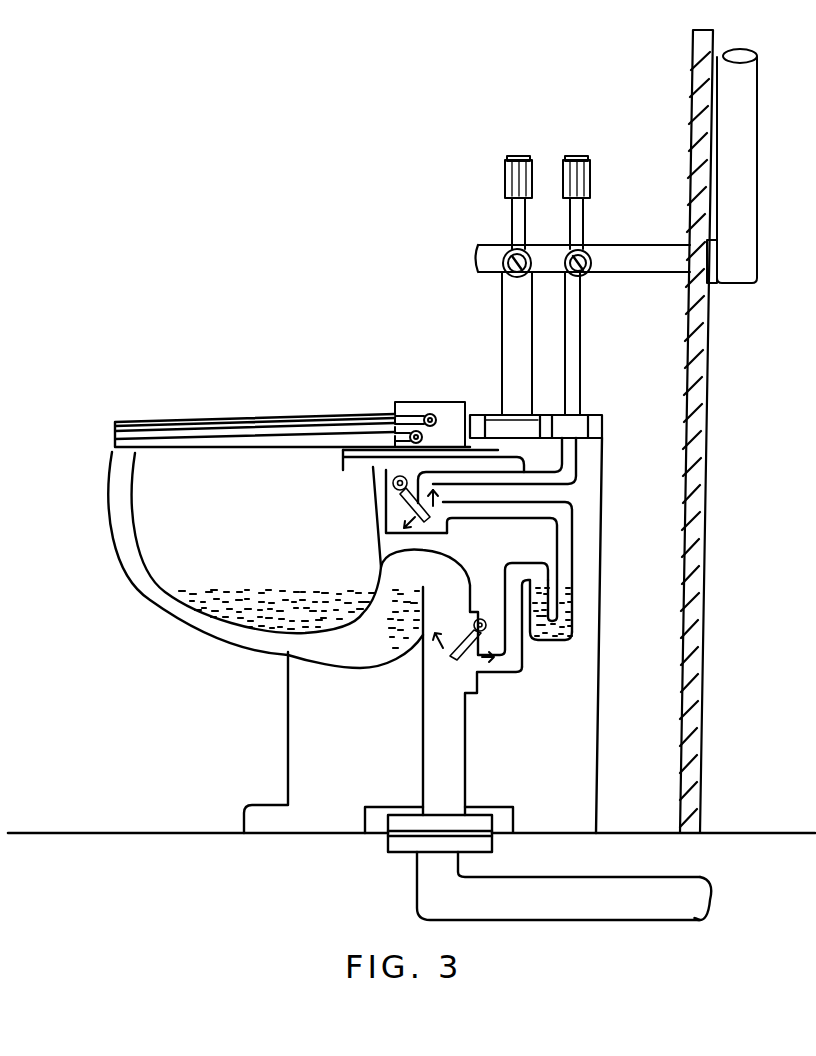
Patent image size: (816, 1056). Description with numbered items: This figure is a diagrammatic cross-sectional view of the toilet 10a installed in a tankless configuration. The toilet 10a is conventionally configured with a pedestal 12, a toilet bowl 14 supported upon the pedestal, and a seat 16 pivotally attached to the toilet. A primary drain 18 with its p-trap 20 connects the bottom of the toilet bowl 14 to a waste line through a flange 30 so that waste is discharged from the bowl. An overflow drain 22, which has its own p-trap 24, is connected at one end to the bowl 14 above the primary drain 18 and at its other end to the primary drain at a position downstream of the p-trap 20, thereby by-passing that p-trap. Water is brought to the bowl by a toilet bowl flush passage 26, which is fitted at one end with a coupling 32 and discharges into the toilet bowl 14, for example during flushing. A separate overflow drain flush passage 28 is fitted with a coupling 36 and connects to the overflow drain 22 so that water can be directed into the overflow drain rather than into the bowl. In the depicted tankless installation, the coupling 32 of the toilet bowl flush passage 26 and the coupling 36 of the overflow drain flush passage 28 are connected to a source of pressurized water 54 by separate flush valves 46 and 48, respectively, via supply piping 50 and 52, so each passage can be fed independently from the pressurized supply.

The toilet with flushable overflow drain 10a is at (122, 329).
The pedestal 12 is at (300, 728).
The toilet bowl 14 is at (133, 557).
The seat 16 is at (113, 438).
The primary drain 18 is at (462, 758).
The p-trap 20 is at (366, 670).
The overflow drain 22 is at (574, 533).
The p-trap 24 is at (583, 605).
The toilet bowl flush passage 26 is at (385, 452).
The overflow drain flush passage 28 is at (570, 474).
The flange 30 is at (400, 822).
The coupling 32 is at (498, 420).
The coupling 36 is at (584, 416).
The flush valve 46 is at (502, 274).
The flush valve 48 is at (585, 258).
The supply piping 50 is at (502, 328).
The supply piping 52 is at (578, 350).
The source of pressurized water 54 is at (651, 275).